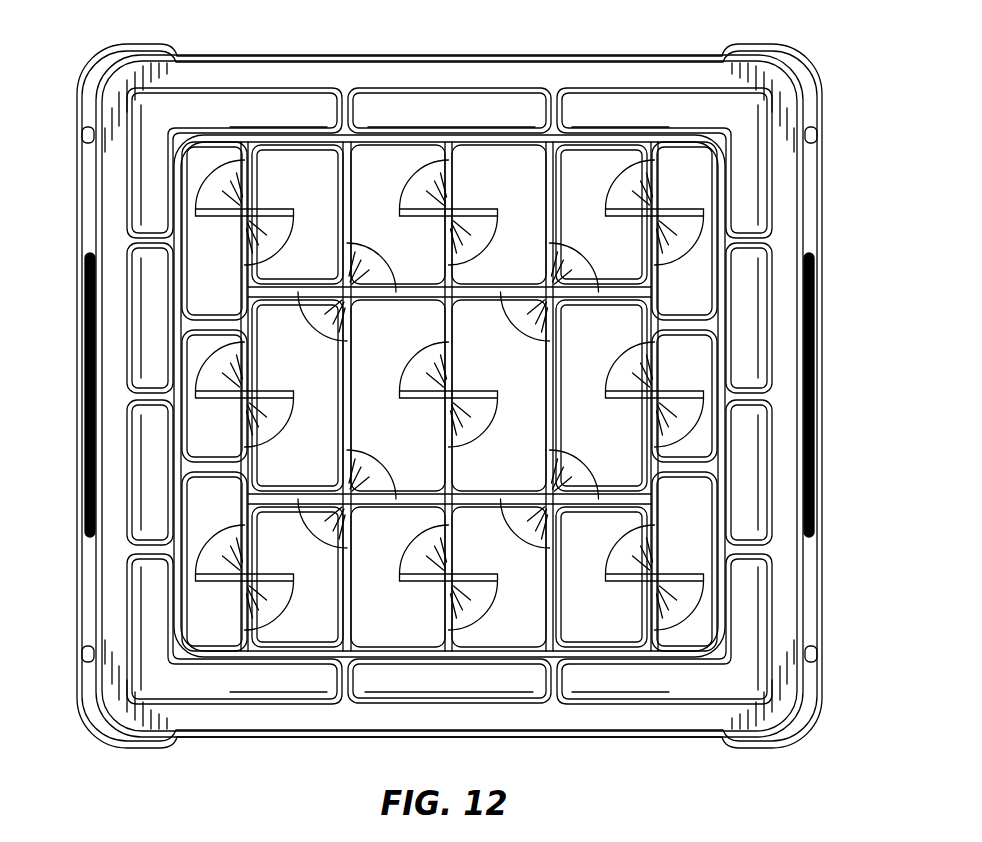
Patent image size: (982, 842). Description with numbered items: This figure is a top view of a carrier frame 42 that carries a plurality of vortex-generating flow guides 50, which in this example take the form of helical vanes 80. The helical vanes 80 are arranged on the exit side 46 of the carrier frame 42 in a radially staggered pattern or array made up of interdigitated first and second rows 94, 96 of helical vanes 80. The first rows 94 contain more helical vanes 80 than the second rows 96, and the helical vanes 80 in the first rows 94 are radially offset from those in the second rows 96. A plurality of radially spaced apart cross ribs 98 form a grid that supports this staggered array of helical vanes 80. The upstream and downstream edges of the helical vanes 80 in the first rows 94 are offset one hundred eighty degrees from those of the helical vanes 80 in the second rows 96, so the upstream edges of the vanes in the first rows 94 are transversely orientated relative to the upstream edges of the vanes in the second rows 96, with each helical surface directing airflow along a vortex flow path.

The carrier frame 42 is at (822, 436).
The exit side 46 is at (638, 74).
The vortex-generating flow guides 50 is at (695, 155).
The helical vane 80 is at (670, 210).
The first rows 94 is at (240, 158).
The second rows 96 is at (341, 160).
The cross ribs 98 is at (655, 262).